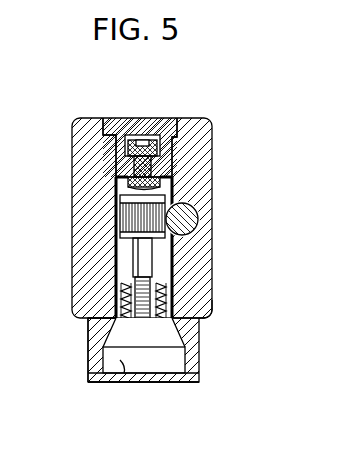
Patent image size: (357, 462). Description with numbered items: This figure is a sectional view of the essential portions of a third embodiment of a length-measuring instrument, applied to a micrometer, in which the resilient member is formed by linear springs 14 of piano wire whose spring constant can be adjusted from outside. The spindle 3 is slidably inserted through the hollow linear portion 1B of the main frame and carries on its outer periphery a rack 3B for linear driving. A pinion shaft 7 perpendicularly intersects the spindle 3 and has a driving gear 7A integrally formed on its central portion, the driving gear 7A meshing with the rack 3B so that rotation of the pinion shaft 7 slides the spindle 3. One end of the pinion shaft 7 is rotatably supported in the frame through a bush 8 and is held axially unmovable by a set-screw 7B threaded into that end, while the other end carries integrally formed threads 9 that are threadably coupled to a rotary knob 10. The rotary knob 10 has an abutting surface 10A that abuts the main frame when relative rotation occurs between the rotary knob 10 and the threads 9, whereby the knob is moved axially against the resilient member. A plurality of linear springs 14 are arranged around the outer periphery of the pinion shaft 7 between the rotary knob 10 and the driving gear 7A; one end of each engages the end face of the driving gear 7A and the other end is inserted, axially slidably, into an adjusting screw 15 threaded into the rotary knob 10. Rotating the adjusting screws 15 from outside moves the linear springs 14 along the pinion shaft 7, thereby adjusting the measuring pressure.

The linear portion 1B is at (200, 163).
The spindle 3 is at (198, 214).
The rack 3B is at (172, 192).
The pinion shaft 7 is at (138, 261).
The driving gear 7A is at (120, 213).
The set-screw 7B is at (137, 118).
The bush 8 is at (116, 158).
The threads 9 is at (98, 328).
The rotary knob 10 is at (193, 338).
The abutting surface 10A is at (200, 312).
The linear springs 14 is at (160, 254).
The adjusting screws 15 is at (132, 381).